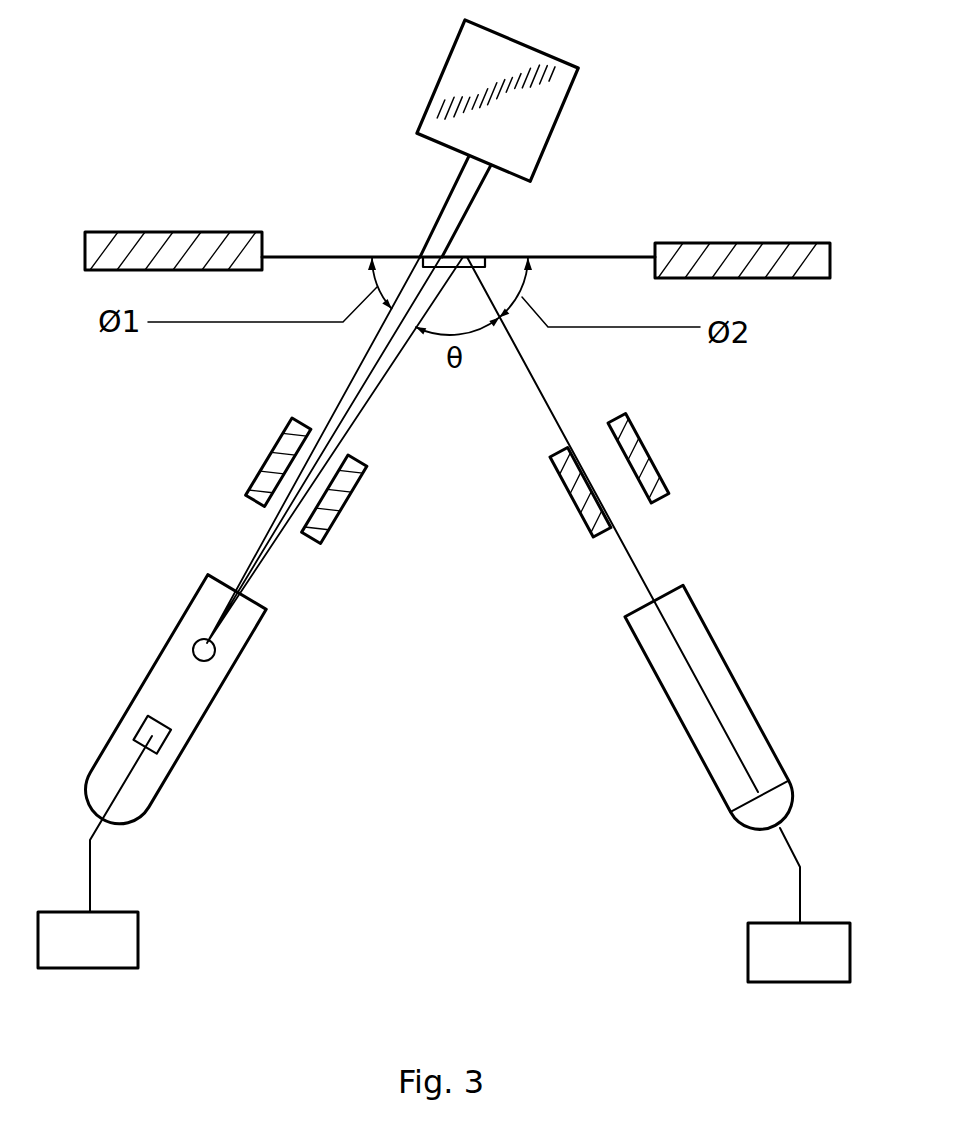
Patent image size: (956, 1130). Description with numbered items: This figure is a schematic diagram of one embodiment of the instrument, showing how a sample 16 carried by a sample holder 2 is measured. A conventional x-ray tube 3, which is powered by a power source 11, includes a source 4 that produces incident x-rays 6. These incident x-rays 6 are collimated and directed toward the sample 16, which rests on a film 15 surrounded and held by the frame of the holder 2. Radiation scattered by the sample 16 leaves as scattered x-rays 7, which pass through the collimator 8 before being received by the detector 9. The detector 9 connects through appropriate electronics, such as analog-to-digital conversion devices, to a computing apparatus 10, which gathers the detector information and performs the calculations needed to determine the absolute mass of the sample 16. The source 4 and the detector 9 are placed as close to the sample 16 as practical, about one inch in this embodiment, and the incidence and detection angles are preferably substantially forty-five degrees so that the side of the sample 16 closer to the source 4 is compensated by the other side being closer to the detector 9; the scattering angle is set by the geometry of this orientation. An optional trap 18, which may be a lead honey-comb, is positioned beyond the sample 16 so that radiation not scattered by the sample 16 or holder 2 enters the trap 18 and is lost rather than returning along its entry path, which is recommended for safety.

The sample holder 2 is at (747, 278).
The x-ray tube 3 is at (185, 753).
The source 4 is at (212, 658).
The incident x-rays 6 is at (338, 397).
The scattered x-rays 7 is at (547, 380).
The collimator 8 is at (632, 465).
The detector 9 is at (733, 670).
The computing apparatus 10 is at (782, 923).
The power source 11 is at (118, 912).
The film 15 is at (593, 257).
The sample 16 is at (467, 257).
The trap 18 is at (545, 52).